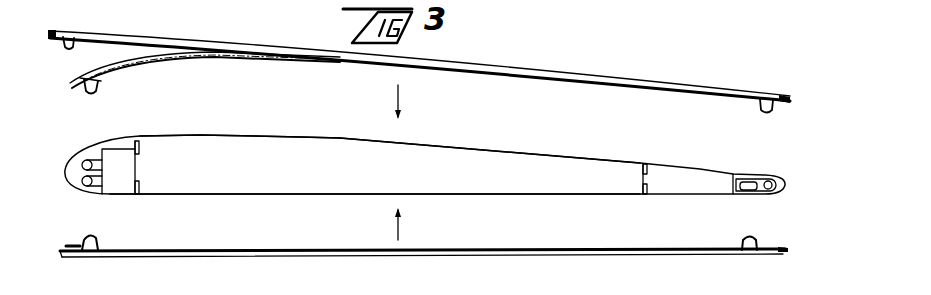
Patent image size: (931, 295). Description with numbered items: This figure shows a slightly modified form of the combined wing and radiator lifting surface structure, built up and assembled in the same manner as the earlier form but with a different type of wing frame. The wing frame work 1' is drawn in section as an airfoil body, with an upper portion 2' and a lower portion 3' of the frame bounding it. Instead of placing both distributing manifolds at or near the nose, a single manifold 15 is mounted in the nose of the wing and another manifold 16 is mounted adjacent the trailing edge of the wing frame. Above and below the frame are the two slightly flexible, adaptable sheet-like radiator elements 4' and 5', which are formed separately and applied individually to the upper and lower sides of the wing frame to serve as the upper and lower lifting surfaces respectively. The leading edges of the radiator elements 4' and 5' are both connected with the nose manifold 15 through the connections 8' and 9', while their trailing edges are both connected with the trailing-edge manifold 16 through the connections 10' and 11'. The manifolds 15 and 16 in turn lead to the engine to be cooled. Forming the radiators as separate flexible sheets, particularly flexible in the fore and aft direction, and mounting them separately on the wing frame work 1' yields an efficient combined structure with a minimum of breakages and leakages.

The wing frame work 1' is at (425, 161).
The upper surface of body 2' is at (390, 132).
The lower surface of body 3' is at (375, 208).
The radiator element 4' is at (419, 66).
The radiator element 5' is at (424, 264).
The connection 8' is at (91, 69).
The connection 9' is at (99, 235).
The connection 10' is at (742, 112).
The connection 11' is at (769, 225).
The manifold 15 is at (125, 171).
The manifold 16 is at (650, 177).